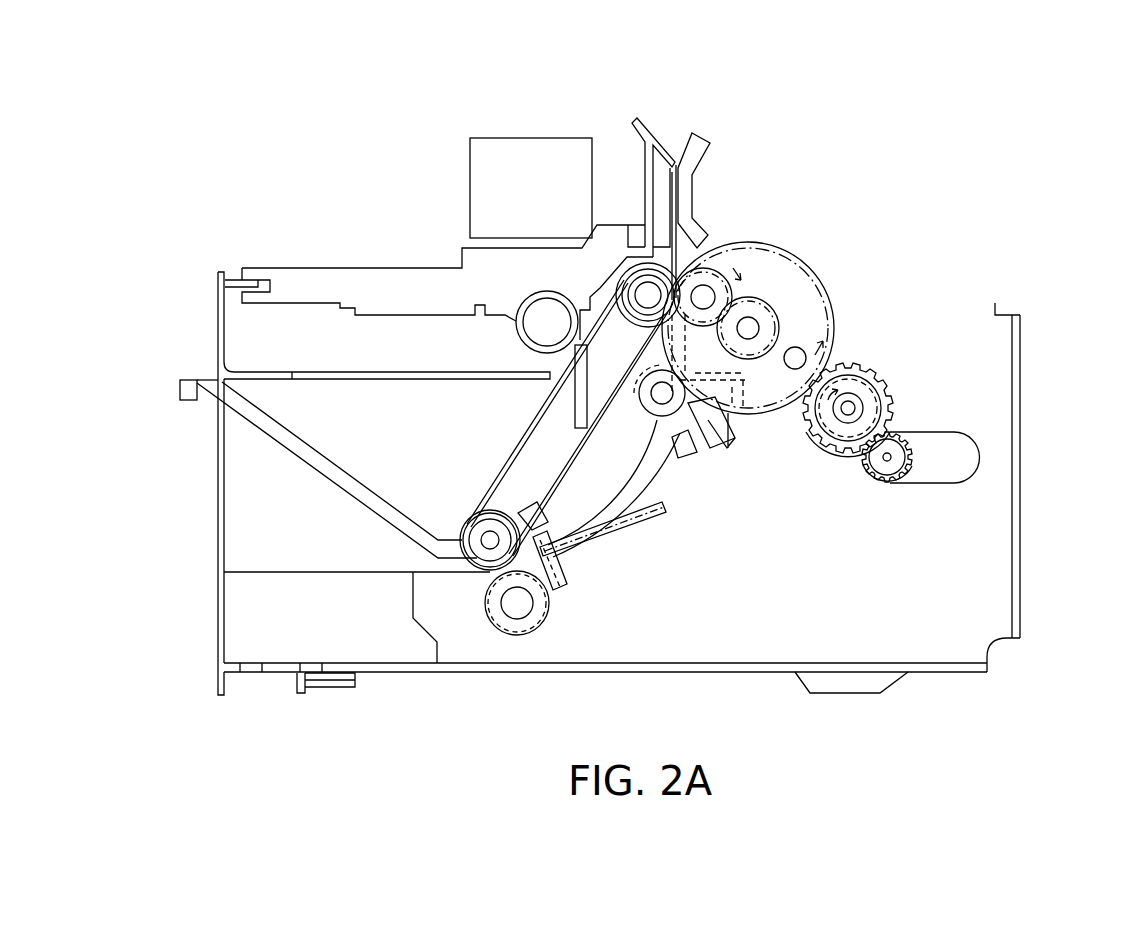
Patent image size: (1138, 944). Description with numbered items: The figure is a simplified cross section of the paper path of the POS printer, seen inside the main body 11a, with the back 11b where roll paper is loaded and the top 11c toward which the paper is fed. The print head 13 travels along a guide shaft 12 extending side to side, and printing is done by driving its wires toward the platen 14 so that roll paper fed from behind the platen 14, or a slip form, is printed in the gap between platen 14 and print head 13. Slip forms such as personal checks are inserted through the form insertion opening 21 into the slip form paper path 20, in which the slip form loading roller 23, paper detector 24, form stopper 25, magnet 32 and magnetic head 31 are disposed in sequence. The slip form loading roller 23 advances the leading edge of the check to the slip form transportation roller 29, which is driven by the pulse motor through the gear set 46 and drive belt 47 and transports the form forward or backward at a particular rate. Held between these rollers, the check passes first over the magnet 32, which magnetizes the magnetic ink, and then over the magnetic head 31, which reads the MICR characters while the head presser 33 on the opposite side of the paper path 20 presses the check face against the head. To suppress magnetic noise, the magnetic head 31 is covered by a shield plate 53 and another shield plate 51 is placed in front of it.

The main body 11a is at (207, 490).
The back of main body 11b is at (1030, 443).
The top of main body 11c is at (708, 82).
The guide shaft 12 is at (535, 320).
The print head 13 is at (535, 157).
The platen 14 is at (697, 172).
The paper path 20 is at (607, 512).
The form insertion opening 21 is at (232, 547).
The slip form loading roller 23 is at (460, 523).
The paper detector 24 is at (540, 512).
The form stopper 25 is at (582, 553).
The slip form transportation roller 29 is at (640, 290).
The magnetic head 31 is at (717, 420).
The magnet 32 is at (690, 455).
The head presser 33 is at (693, 447).
The gear set 46 is at (753, 202).
The drive belt 47 is at (505, 478).
The shield plate 51 is at (573, 418).
The shield plate 53 is at (745, 418).